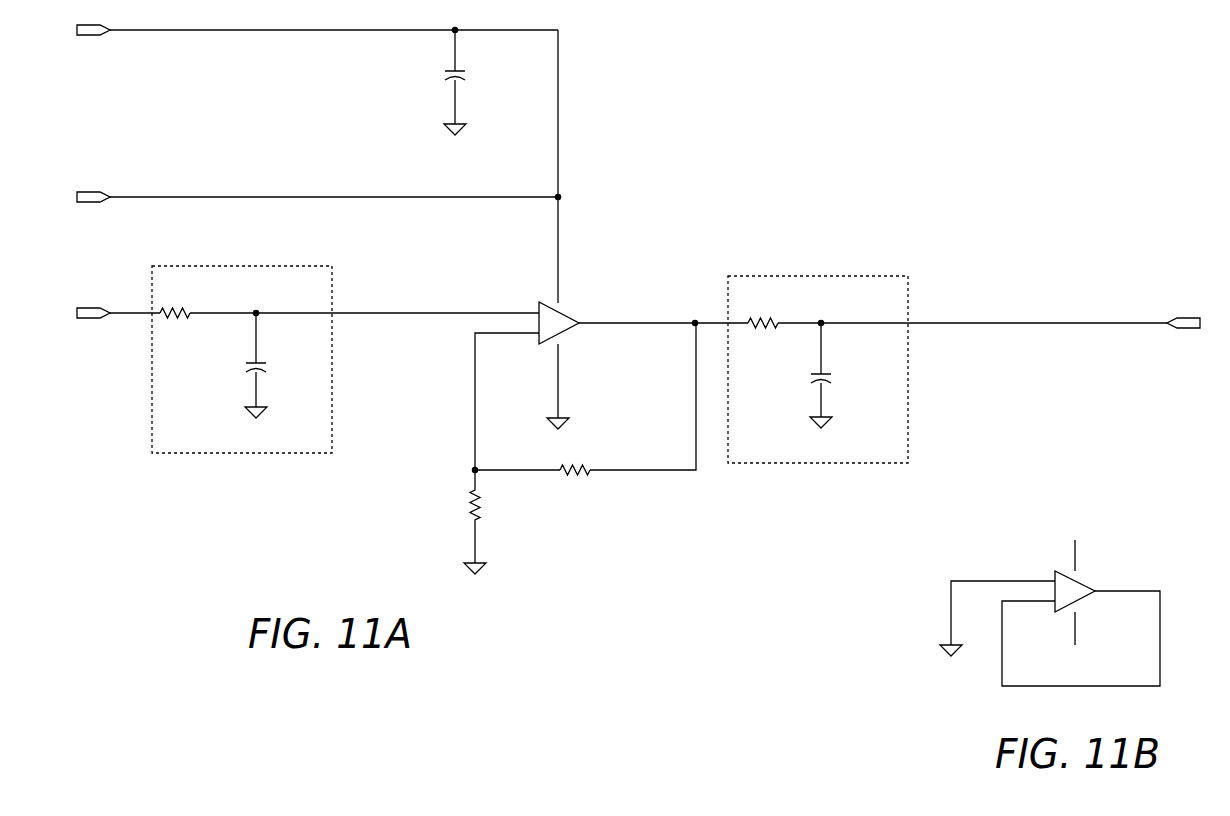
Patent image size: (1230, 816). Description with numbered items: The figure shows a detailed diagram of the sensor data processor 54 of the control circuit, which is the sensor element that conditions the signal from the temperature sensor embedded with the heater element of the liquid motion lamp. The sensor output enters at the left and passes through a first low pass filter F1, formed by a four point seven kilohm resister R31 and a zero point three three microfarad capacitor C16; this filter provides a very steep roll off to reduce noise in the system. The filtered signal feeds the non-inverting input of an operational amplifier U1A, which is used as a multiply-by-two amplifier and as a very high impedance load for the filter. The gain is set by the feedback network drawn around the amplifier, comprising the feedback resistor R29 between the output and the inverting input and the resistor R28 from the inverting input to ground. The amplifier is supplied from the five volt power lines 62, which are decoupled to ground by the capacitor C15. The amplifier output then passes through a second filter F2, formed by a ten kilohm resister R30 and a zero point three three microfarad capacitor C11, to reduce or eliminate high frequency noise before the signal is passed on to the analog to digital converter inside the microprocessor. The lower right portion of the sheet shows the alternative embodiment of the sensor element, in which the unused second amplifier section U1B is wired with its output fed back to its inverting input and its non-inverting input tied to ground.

In FIG. 11A, the sensor data processor 54 is at (966, 124).
In FIG. 11A, the power supply input (5VDC) 62 is at (300, 30).
In FIG. 11A, the first low pass filter F1 is at (345, 395).
In FIG. 11A, the second filter F2 is at (821, 404).
In FIG. 11A, the resister R31 is at (177, 298).
In FIG. 11A, the capacitor C16 is at (272, 365).
In FIG. 11A, the capacitor C15 is at (472, 82).
In FIG. 11A, the operational amplifier U1A is at (571, 354).
In FIG. 11A, the feedback resistor R29 is at (575, 458).
In FIG. 11A, the resistor R28 is at (487, 522).
In FIG. 11A, the resister R30 is at (763, 310).
In FIG. 11A, the capacitor C11 is at (836, 375).
In FIG. 11B, the operational amplifier U1B is at (1050, 613).